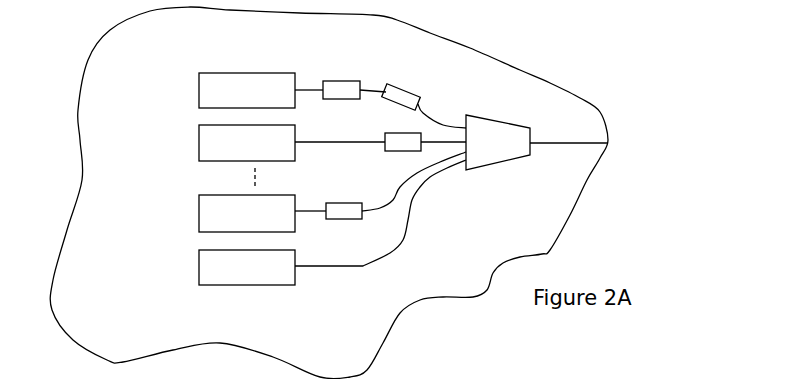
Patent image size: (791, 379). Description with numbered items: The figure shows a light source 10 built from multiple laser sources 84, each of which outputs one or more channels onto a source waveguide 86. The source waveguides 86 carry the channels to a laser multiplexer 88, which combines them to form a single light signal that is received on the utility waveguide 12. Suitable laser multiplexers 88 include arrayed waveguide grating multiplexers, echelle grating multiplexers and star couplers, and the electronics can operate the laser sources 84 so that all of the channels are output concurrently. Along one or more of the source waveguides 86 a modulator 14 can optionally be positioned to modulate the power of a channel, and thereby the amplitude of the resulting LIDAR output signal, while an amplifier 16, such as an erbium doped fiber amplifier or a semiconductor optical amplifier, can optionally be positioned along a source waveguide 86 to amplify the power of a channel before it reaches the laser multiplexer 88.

The light source 10 is at (448, 68).
The utility waveguide 12 is at (590, 143).
The modulator 14 is at (410, 84).
The amplifier 16 is at (350, 80).
The laser sources 84 is at (247, 73).
The source waveguide 86 is at (383, 145).
The laser multiplexer 88 is at (487, 113).